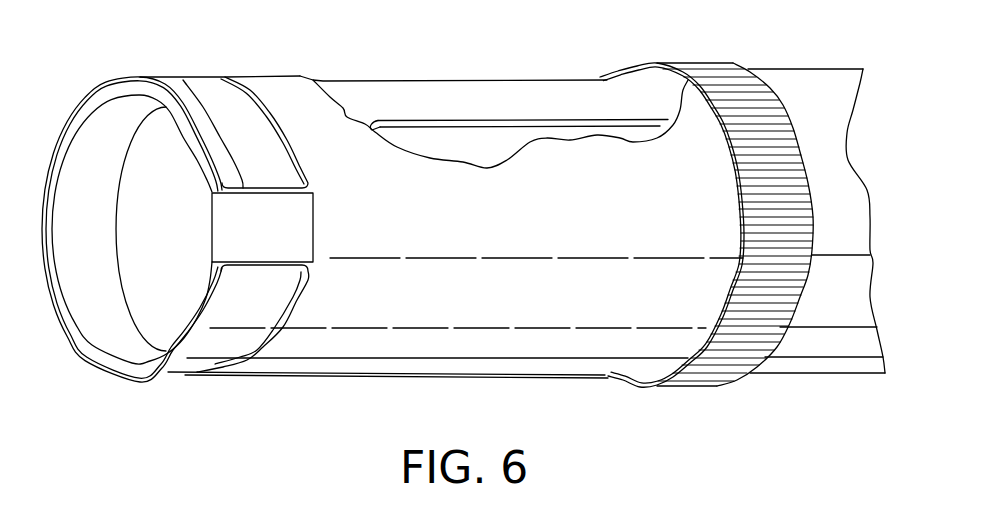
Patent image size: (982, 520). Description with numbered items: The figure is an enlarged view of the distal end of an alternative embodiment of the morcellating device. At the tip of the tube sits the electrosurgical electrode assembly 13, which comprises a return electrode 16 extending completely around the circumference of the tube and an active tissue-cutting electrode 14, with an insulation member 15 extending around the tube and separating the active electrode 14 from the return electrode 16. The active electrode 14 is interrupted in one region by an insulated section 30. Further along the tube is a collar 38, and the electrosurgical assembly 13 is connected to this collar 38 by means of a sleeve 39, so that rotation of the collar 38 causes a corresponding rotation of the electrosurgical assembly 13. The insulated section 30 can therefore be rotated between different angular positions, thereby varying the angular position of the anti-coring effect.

The electrosurgical electrode assembly 13 is at (136, 74).
The active tissue-cutting electrode 14 is at (138, 374).
The insulation member 15 is at (207, 340).
The return electrode 16 is at (212, 88).
The insulated section 30 is at (297, 245).
The collar 38 is at (718, 370).
The sleeve 39 is at (528, 363).